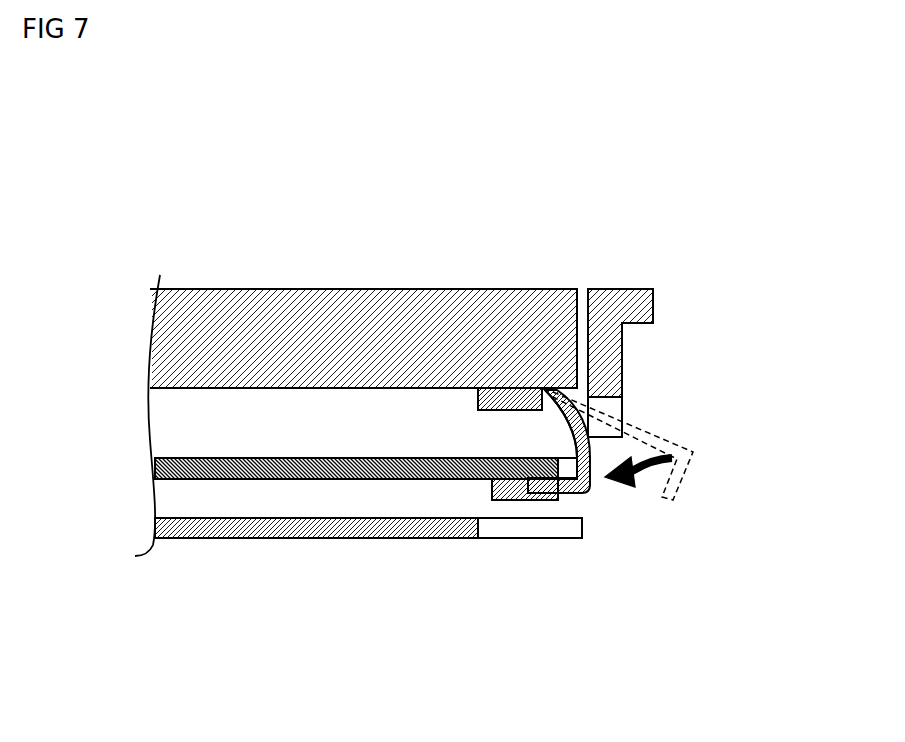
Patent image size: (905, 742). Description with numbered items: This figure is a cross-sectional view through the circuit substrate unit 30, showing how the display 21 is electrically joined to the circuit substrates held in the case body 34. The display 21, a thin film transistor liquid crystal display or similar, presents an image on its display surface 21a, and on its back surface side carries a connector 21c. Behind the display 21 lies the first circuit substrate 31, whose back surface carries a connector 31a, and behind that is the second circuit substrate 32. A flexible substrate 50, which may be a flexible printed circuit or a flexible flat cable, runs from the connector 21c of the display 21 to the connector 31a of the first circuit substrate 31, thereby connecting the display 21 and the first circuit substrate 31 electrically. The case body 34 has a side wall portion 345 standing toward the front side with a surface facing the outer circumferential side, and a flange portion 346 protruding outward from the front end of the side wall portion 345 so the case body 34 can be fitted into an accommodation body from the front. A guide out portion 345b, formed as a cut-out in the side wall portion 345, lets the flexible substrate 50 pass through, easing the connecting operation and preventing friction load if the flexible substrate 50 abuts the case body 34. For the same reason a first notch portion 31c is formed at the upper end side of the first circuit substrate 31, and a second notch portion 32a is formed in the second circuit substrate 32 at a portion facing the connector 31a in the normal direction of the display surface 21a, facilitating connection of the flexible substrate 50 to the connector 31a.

The display 21 is at (406, 325).
The display surface 21a is at (270, 289).
The connector 21c is at (510, 398).
The circuit substrate unit 30 is at (696, 283).
The case body 34 is at (684, 308).
The flange portion 346 is at (645, 307).
The side wall portion 345 is at (612, 357).
The guide out portion 345b is at (605, 398).
The first circuit substrate 31 is at (182, 465).
The connector 31a is at (492, 483).
The first notch portion 31c is at (598, 473).
The flexible substrate 50 is at (563, 422).
The second circuit substrate 32 is at (182, 540).
The second notch portion 32a is at (480, 530).